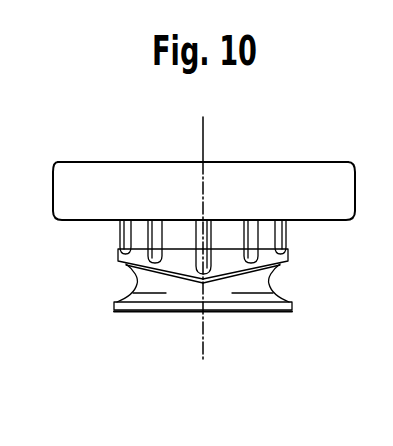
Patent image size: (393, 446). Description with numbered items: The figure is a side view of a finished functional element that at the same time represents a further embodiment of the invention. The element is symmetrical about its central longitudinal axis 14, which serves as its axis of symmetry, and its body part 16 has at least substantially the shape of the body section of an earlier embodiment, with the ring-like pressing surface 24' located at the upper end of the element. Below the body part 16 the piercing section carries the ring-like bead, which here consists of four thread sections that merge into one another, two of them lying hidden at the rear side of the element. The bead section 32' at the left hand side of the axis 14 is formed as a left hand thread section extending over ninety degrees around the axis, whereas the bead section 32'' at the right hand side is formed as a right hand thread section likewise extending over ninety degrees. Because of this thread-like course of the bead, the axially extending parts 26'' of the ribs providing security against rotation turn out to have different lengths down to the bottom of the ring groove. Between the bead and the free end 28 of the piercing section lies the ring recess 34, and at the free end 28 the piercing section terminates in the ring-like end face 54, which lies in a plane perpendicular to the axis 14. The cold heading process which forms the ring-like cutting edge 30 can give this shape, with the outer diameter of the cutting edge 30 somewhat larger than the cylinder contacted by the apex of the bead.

The longitudinal axis 14 is at (204, 143).
The body part 16 is at (308, 181).
The ring-like pressing surface 24' is at (203, 131).
The axially extending parts of ribs 26'' is at (204, 228).
The ring-like bead section 32' is at (116, 271).
The ring-like bead section 32'' is at (286, 275).
The ring recess 34 is at (136, 276).
The free end 28 is at (163, 313).
The ring-like cutting edge 30 is at (118, 312).
The ring-like end face 54 is at (247, 313).